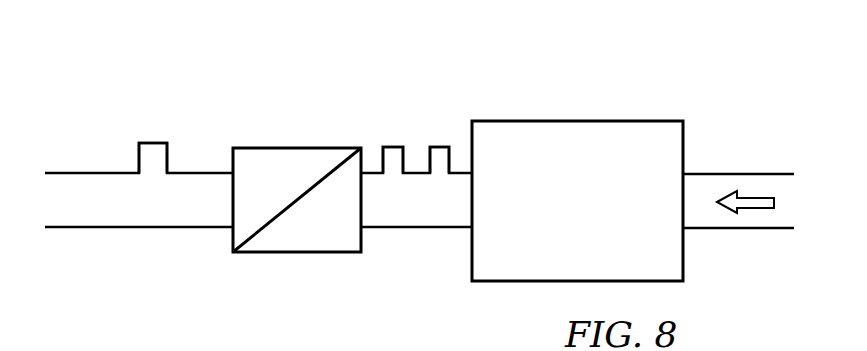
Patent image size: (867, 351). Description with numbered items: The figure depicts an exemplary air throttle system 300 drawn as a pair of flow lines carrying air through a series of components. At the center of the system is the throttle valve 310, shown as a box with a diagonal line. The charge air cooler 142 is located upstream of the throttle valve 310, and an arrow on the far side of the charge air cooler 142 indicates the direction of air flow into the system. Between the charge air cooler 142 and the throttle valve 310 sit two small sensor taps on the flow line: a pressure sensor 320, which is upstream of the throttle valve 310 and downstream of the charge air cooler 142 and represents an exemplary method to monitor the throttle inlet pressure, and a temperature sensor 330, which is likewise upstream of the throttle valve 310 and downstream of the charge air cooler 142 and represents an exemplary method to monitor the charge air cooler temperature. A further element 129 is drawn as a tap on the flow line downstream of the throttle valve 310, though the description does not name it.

The air throttle system 300 is at (128, 75).
The exhaust gas sensor 129 is at (154, 133).
The throttle valve 310 is at (301, 140).
The pressure sensor 320 is at (396, 139).
The temperature sensor 330 is at (443, 139).
The charge air cooler 142 is at (568, 142).